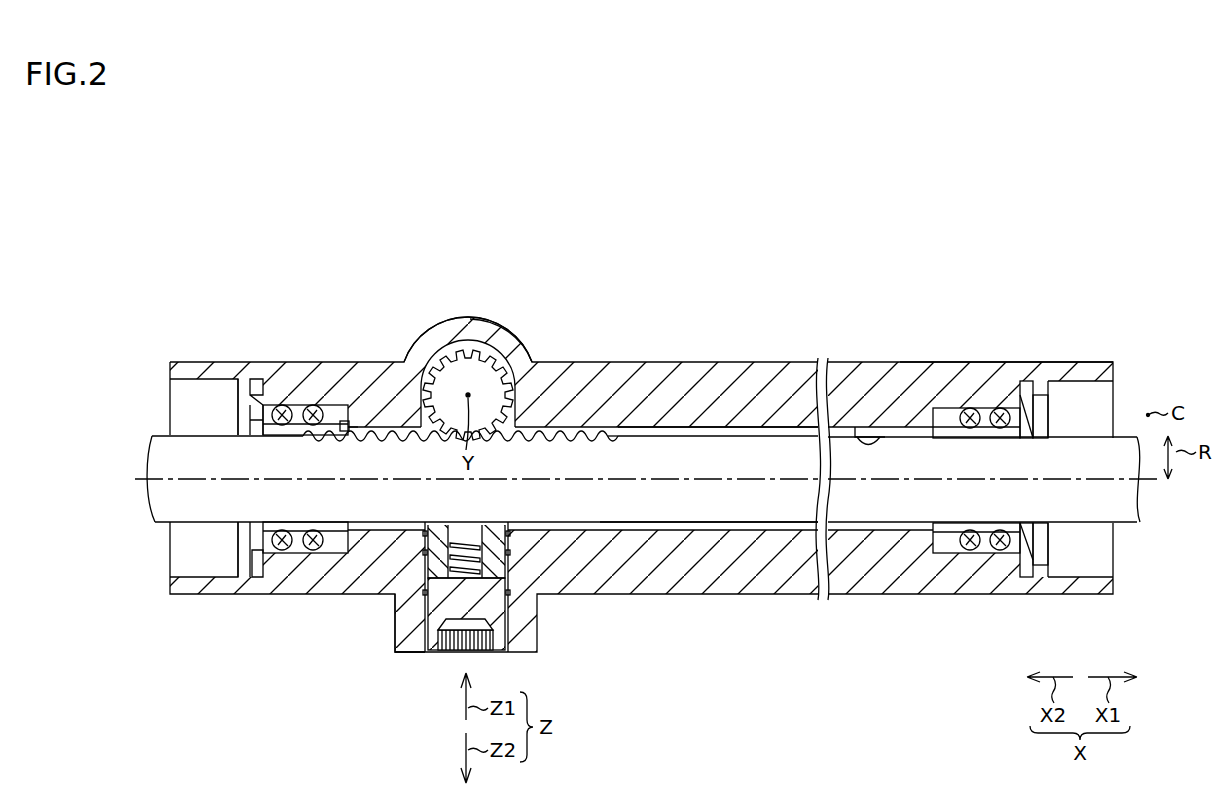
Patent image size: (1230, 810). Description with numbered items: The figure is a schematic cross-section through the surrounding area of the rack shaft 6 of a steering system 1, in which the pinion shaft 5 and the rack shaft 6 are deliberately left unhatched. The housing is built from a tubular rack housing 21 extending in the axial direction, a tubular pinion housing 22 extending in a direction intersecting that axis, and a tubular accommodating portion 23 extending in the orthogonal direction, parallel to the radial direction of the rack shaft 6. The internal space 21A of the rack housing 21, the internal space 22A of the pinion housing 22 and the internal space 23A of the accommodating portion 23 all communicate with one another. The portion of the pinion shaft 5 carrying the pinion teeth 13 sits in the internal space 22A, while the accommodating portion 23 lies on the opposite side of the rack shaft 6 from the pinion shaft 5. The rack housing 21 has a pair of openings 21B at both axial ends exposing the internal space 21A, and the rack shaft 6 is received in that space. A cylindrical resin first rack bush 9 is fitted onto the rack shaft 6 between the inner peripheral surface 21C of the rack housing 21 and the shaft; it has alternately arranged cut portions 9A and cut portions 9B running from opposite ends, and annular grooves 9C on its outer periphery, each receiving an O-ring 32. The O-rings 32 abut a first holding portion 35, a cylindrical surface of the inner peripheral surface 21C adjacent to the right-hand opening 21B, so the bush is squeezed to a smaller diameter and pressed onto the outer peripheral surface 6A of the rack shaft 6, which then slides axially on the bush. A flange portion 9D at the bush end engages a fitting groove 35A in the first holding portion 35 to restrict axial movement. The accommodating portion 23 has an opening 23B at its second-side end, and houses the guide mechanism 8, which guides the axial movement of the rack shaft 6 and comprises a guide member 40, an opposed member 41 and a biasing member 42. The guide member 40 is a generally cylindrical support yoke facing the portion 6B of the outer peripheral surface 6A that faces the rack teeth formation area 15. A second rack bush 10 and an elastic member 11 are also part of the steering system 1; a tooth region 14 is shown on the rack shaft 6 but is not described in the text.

The steering system 1 is at (958, 310).
The pinion shaft 5 is at (445, 385).
The rack shaft 6 is at (408, 462).
The outer peripheral surface 6A is at (893, 435).
The portion 6B is at (712, 526).
The guide mechanism 8 is at (431, 682).
The first rack bush 9 is at (943, 423).
The cut portions 9A is at (970, 530).
The cut portions 9B is at (1014, 435).
The annular grooves 9C is at (1000, 408).
The flange portion 9D is at (1038, 405).
The second rack bush 10 is at (346, 421).
The elastic member 11 is at (313, 405).
The pinion teeth 13 is at (468, 350).
The worm teeth 14 is at (580, 430).
The rack teeth formation area 15 is at (606, 430).
The rack housing 21 is at (777, 377).
The internal space 21A is at (718, 428).
The openings 21B is at (172, 392).
The inner peripheral surface 21C is at (858, 435).
The pinion housing 22 is at (455, 335).
The internal space 22A is at (503, 350).
The accommodating portion 23 is at (528, 623).
The internal space 23A is at (515, 565).
The opening 23B is at (497, 650).
The O-ring 32 is at (1000, 550).
The first holding portion 35 is at (936, 545).
The fitting groove 35A is at (1035, 570).
The guide member 40 is at (452, 540).
The opposed member 41 is at (420, 612).
The biasing member 42 is at (480, 545).